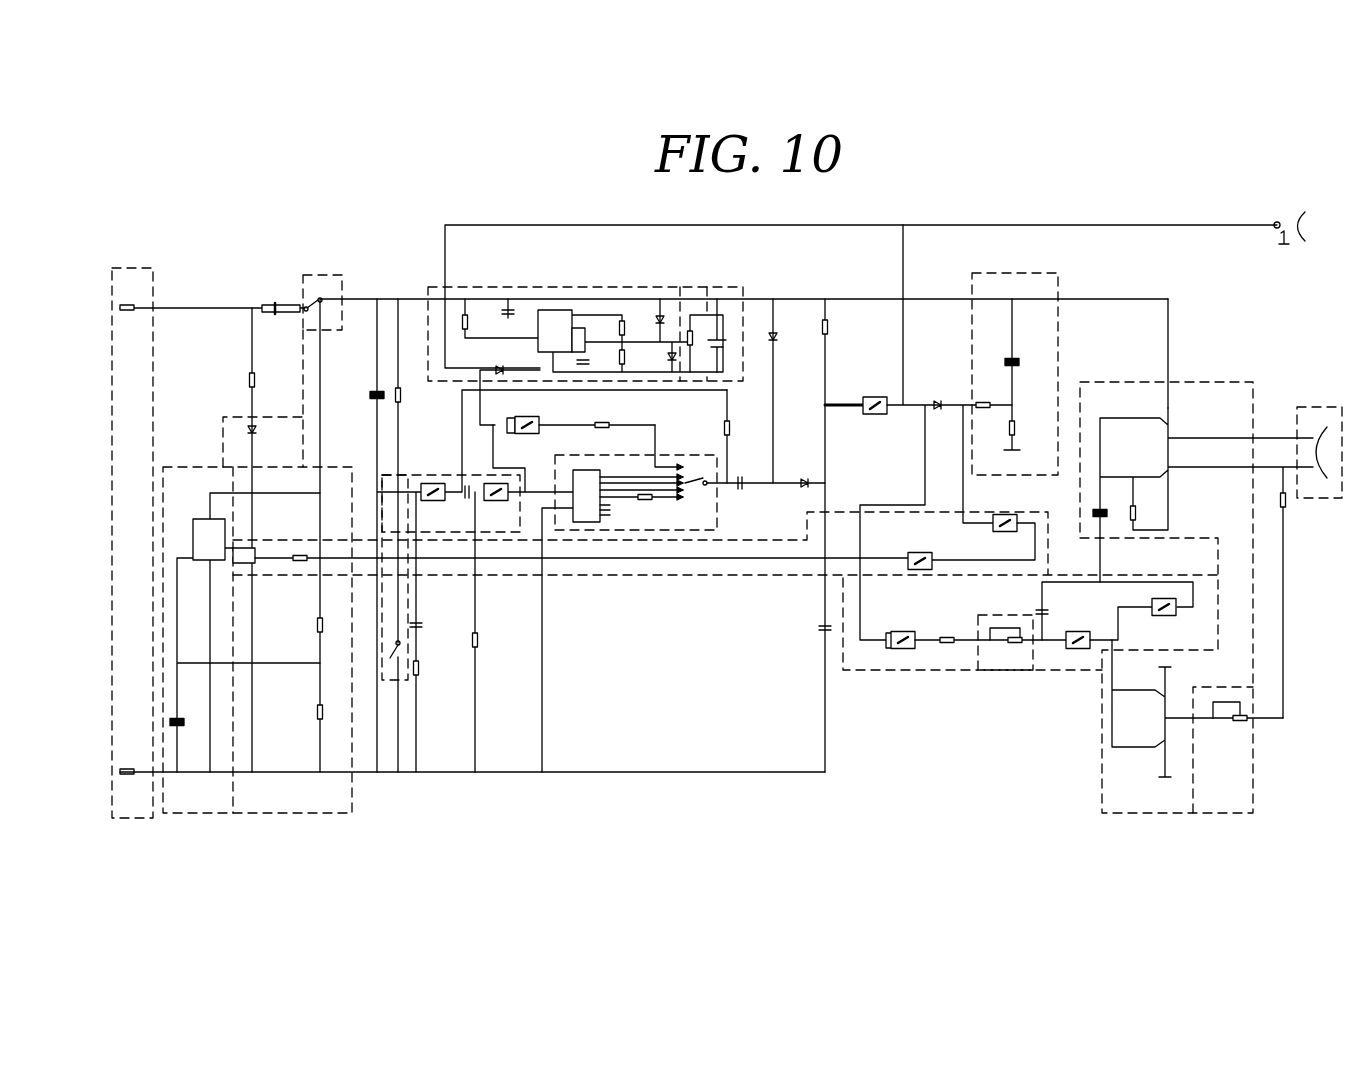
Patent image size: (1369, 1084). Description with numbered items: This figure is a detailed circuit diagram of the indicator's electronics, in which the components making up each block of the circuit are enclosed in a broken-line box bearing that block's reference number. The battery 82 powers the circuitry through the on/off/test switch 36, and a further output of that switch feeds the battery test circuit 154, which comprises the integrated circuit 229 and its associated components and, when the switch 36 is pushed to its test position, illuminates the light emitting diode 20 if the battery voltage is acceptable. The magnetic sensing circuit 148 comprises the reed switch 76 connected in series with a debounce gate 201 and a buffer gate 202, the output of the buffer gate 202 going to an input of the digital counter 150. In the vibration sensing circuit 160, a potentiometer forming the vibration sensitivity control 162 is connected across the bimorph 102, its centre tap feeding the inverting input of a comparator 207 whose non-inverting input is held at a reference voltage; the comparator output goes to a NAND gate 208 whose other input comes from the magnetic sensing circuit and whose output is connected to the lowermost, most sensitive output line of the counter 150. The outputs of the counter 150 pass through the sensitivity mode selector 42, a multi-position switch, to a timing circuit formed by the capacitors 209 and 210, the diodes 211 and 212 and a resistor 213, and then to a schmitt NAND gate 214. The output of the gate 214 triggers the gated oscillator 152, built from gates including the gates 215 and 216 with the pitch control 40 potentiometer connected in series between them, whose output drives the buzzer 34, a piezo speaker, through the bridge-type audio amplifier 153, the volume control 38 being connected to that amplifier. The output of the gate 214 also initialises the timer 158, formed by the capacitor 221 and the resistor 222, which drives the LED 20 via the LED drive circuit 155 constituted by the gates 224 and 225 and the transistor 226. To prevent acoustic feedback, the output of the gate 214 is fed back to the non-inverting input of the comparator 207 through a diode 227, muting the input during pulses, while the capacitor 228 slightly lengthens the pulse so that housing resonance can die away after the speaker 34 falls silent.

The light emitting diode 20 is at (232, 445).
The buzzer 34 is at (1315, 418).
The on/off/test switch 36 is at (320, 275).
The volume control 38 is at (1232, 765).
The pitch control 40 is at (997, 655).
The sensitivity mode selector 42 is at (650, 528).
The reed switch 76 is at (402, 645).
The battery 82 is at (130, 818).
The bimorph 102 is at (728, 300).
The magnetic sensing circuit 148 is at (405, 582).
The digital counter 150 is at (572, 525).
The gated oscillator 152 is at (932, 645).
The audio amplifier 153 is at (1232, 663).
The battery test circuit 154 is at (198, 798).
The LED drive circuit 155 is at (880, 532).
The timer 158 is at (1040, 345).
The vibration sensing circuit 160 is at (585, 300).
The vibration sensitivity control 162 is at (695, 300).
The debounce gate 201 is at (428, 486).
The buffer gate 202 is at (498, 500).
The comparator 207 is at (552, 310).
The NAND gate 208 is at (520, 417).
The capacitor 209 is at (740, 486).
The capacitor 210 is at (820, 635).
The diode 211 is at (775, 340).
The diode 212 is at (810, 475).
The resistor 213 is at (828, 328).
The schmitt NAND gate 214 is at (878, 400).
The gate 215 is at (888, 625).
The gate 216 is at (1068, 632).
The capacitor 221 is at (1005, 360).
The resistor 222 is at (1008, 428).
The gate 224 is at (1000, 513).
The gate 225 is at (900, 550).
The transistor 226 is at (258, 563).
The diode 227 is at (495, 375).
The capacitor 228 is at (585, 368).
The integrated circuit 229 is at (208, 548).